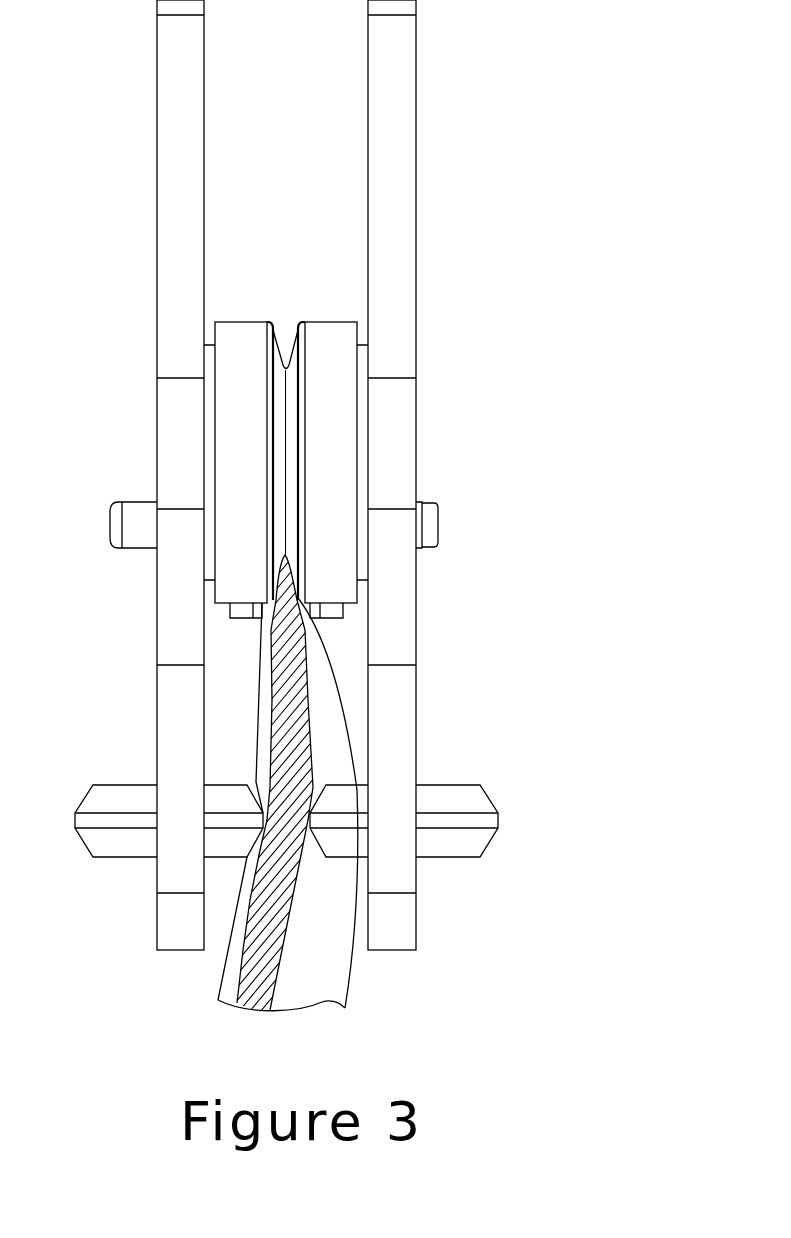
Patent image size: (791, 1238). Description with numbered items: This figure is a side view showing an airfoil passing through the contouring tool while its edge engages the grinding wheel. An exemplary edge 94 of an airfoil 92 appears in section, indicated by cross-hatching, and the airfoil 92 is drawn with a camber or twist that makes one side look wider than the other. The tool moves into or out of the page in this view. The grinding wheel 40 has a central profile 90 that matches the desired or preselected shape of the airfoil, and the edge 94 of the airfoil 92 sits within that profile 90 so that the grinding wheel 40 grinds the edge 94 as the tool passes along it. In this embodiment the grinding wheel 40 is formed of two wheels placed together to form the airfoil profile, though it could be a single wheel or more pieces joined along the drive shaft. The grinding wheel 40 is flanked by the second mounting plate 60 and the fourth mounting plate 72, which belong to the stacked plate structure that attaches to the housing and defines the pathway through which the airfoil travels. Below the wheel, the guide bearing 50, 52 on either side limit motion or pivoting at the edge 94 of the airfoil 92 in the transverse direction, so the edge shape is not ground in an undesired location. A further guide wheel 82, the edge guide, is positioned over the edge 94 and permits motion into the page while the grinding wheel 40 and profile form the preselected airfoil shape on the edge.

The grinding wheel 40 is at (286, 410).
The guide bearing 50 is at (447, 787).
The guide bearing 52 is at (128, 785).
The second mounting plate 60 is at (393, 104).
The fourth mounting plate 72 is at (183, 110).
The guide wheel 82 is at (330, 612).
The central profile 90 is at (280, 353).
The airfoil 92 is at (231, 678).
The edge 94 is at (283, 553).